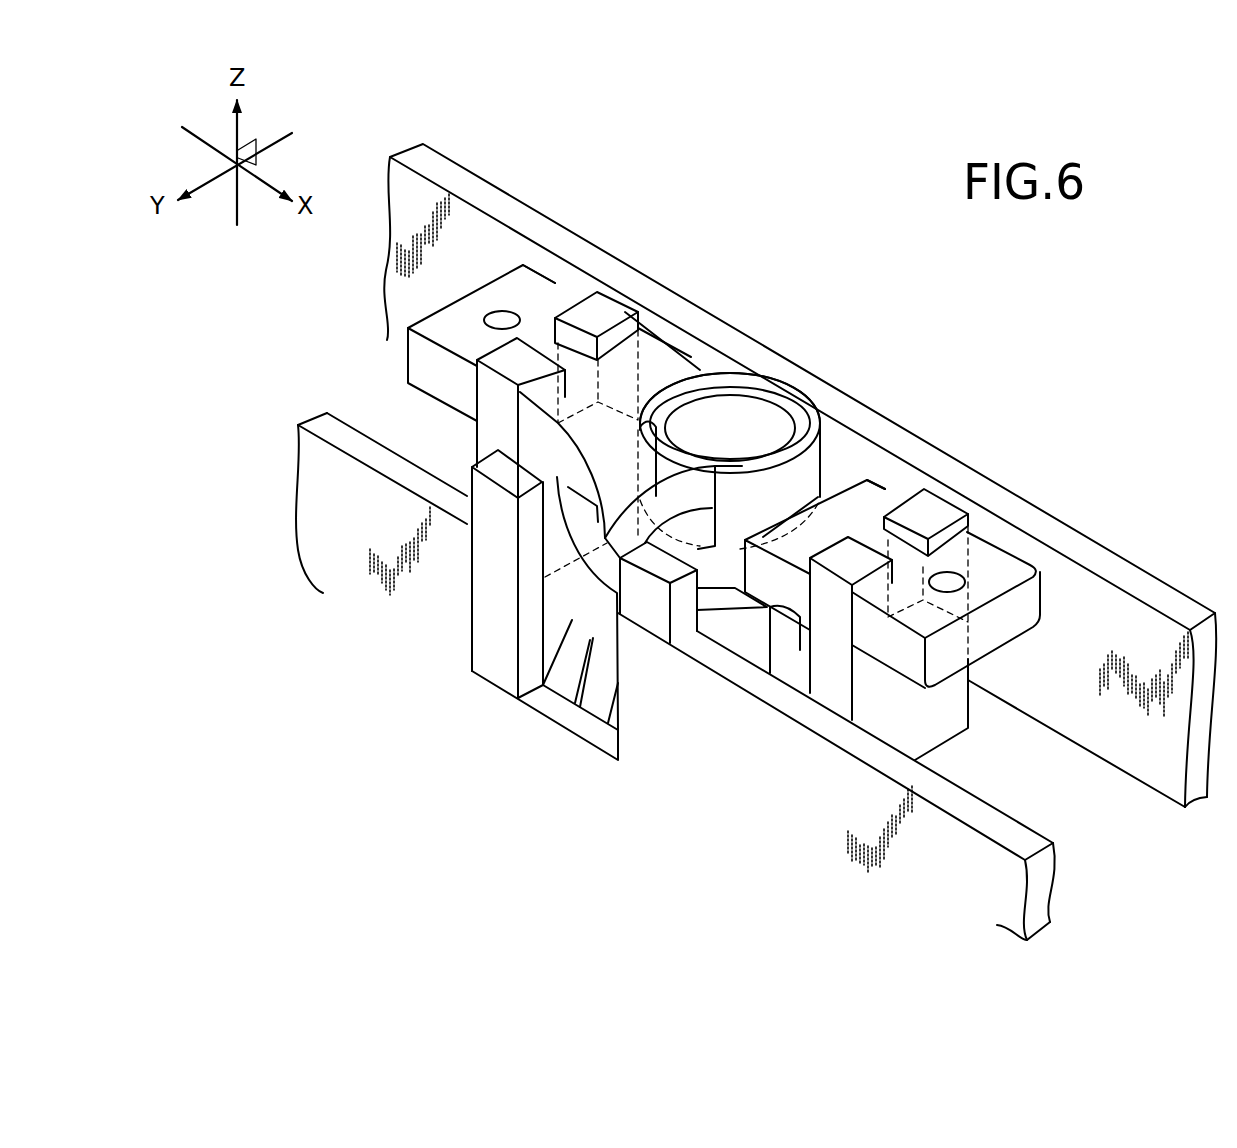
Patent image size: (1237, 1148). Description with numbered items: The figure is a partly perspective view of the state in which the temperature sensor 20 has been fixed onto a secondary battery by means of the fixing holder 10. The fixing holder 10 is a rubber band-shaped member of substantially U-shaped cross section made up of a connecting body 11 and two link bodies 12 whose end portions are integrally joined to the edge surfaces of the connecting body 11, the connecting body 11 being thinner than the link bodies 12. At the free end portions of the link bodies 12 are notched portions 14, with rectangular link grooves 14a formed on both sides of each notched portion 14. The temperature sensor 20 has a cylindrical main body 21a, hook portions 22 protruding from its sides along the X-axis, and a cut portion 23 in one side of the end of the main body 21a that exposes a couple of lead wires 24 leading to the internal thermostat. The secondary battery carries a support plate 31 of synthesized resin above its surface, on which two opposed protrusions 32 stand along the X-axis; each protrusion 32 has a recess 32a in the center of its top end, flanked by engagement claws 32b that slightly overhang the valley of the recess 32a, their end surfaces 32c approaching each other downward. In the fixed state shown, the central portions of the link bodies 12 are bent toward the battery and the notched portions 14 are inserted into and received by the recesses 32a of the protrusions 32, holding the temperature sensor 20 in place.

The fixing holder 10 is at (756, 542).
The connecting body 11 is at (577, 597).
The link bodies 12 is at (557, 477).
The notched portions 14 is at (717, 447).
The link grooves 14a is at (480, 378).
The temperature sensor 20 is at (753, 528).
The main body 21a is at (770, 348).
The hook portions 22 is at (800, 640).
The cut portion 23 is at (700, 499).
The lead wires 24 is at (563, 690).
The support plate 31 is at (1080, 527).
The protrusions 32 is at (747, 370).
The recesses 32a is at (645, 365).
The engagement claws 32b is at (630, 300).
The end surfaces 32c is at (600, 313).